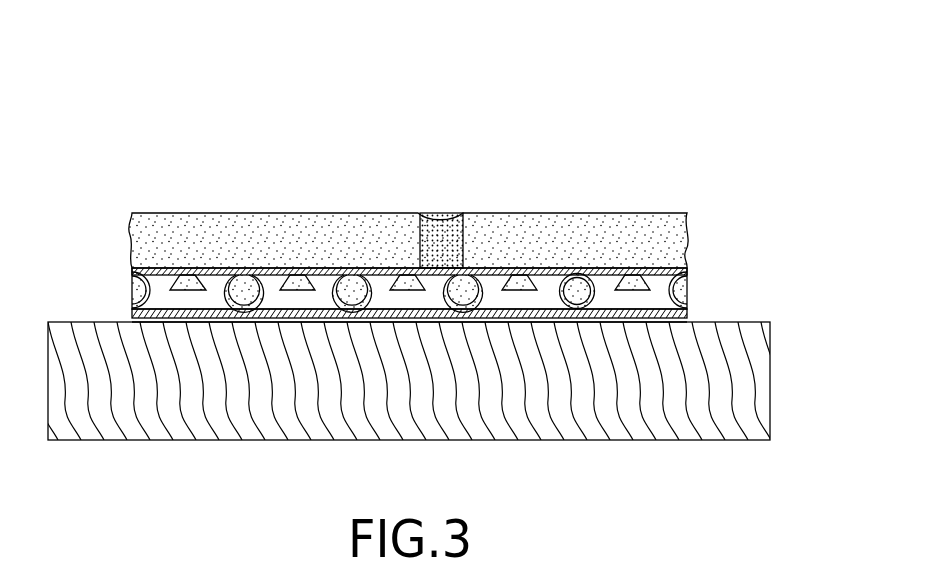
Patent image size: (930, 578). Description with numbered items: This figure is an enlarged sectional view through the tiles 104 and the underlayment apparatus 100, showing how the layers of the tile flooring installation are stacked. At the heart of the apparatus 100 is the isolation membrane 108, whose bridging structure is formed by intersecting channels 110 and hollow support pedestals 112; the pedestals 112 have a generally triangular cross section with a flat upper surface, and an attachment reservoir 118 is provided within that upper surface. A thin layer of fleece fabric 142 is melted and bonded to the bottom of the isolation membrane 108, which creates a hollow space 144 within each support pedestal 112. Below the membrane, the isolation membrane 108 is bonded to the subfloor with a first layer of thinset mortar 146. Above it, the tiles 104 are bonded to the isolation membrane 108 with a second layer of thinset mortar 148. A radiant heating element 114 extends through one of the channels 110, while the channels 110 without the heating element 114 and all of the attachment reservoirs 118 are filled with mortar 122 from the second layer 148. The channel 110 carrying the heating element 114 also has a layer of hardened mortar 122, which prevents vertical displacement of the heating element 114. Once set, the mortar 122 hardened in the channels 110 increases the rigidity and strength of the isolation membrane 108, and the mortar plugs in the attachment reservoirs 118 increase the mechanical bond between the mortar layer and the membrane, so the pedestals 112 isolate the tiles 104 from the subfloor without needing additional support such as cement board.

The underlayment apparatus 100 is at (126, 100).
The tiles 104 is at (300, 228).
The isolation membrane 108 is at (278, 321).
The channels 110 is at (463, 288).
The support pedestals 112 is at (132, 270).
The radiant heating element 114 is at (577, 290).
The attachment reservoir 118 is at (410, 283).
The thinset mortar 122 is at (244, 285).
The fleece fabric 142 is at (658, 340).
The hollow space 144 is at (410, 303).
The first layer of thinset mortar 146 is at (688, 318).
The second layer of thinset mortar 148 is at (688, 273).